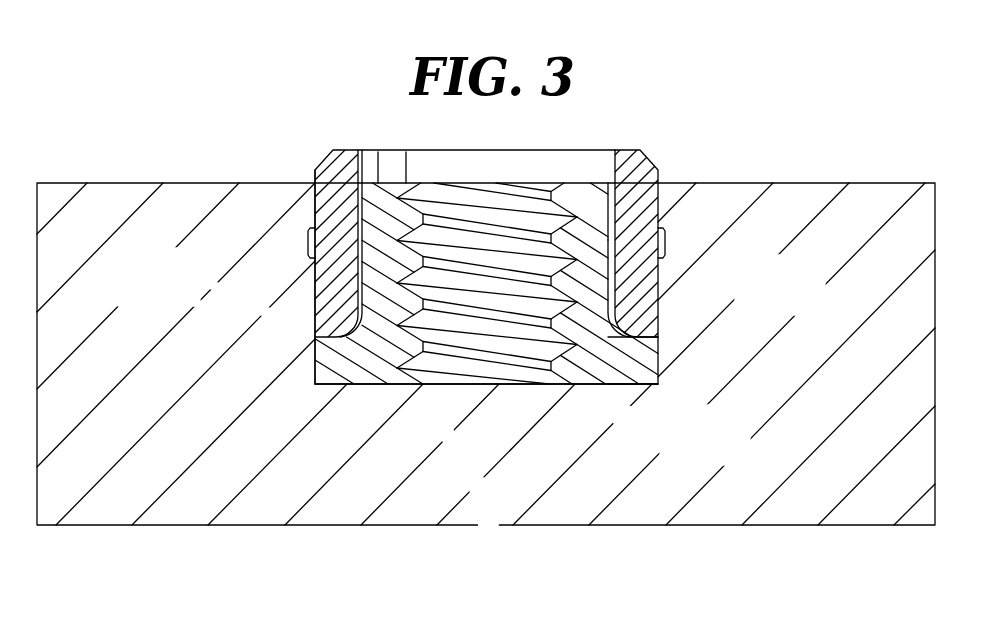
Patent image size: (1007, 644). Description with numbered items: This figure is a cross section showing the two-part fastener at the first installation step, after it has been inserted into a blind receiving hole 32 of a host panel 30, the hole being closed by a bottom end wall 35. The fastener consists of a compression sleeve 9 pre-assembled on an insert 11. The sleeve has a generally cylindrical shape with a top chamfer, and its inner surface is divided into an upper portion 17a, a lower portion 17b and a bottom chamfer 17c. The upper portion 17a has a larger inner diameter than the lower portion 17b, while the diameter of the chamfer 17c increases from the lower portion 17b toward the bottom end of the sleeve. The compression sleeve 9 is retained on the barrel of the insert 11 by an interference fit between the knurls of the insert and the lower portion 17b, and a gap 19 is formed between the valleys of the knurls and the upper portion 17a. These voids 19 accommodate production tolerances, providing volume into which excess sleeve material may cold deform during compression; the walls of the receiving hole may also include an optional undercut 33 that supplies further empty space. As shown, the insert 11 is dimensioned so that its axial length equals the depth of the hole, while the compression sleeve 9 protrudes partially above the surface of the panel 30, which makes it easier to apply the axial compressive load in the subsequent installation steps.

The compression sleeve 9 is at (348, 150).
The insert 11 is at (585, 197).
The upper portion of the inner surface 17a is at (612, 160).
The lower portion of the inner surface 17b is at (606, 293).
The bottom chamfer 17c is at (627, 337).
The gap 19 is at (362, 218).
The host panel 30 is at (880, 185).
The receiving hole 32 is at (315, 322).
The undercut 33 is at (308, 240).
The bottom end wall 35 is at (443, 385).